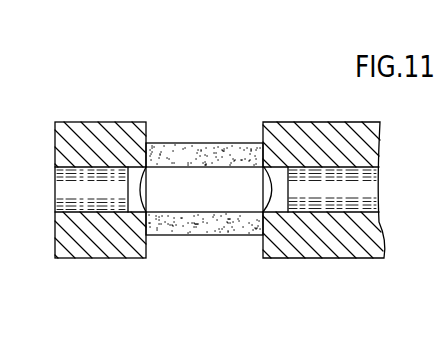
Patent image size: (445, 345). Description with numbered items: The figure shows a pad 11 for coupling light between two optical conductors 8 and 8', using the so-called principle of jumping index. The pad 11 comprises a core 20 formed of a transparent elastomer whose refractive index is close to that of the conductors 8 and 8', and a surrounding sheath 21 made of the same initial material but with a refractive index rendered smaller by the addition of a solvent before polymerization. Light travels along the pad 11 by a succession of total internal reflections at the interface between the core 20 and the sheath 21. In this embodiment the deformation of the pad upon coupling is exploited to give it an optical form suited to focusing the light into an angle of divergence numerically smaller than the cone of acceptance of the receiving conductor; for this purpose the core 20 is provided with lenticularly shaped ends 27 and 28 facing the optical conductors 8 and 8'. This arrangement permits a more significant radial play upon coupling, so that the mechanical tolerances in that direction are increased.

The pad 11 is at (243, 126).
The optical conductor 8 is at (100, 218).
The optical conductor 8' is at (324, 218).
The sheath 21 is at (180, 148).
The core 20 is at (193, 192).
The lenticularly shaped end 27 is at (140, 188).
The lenticularly shaped end 28 is at (268, 188).